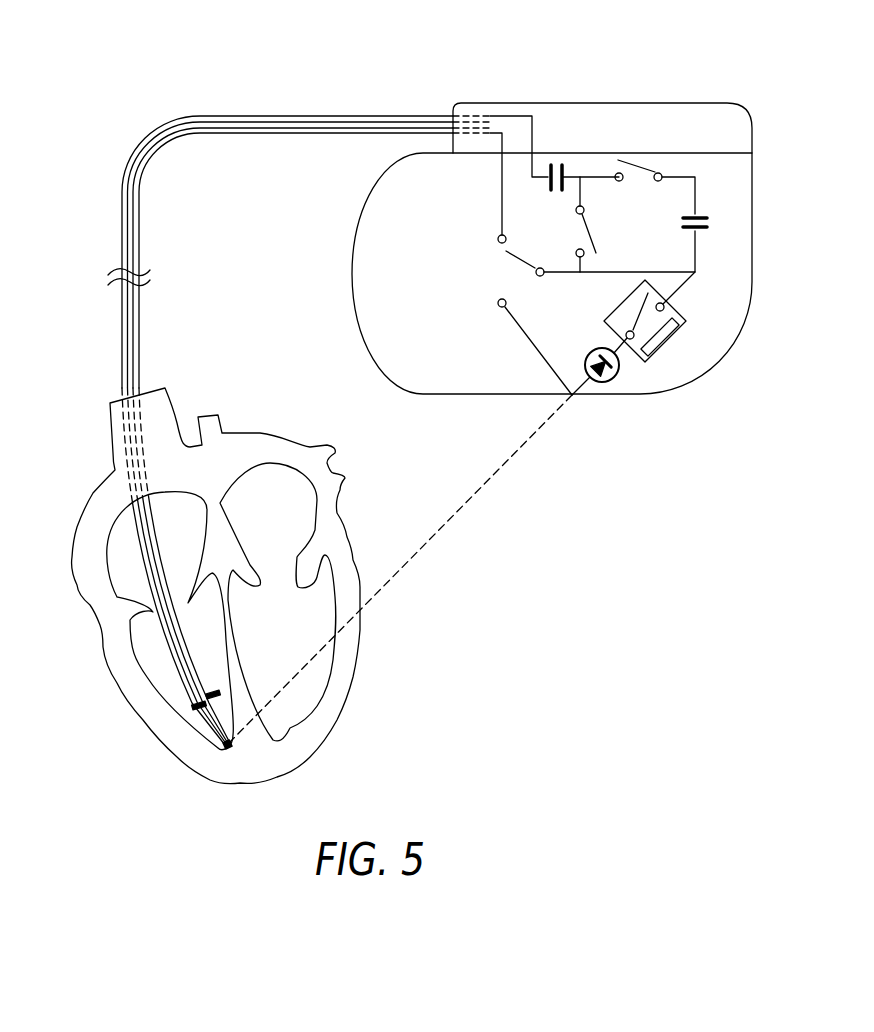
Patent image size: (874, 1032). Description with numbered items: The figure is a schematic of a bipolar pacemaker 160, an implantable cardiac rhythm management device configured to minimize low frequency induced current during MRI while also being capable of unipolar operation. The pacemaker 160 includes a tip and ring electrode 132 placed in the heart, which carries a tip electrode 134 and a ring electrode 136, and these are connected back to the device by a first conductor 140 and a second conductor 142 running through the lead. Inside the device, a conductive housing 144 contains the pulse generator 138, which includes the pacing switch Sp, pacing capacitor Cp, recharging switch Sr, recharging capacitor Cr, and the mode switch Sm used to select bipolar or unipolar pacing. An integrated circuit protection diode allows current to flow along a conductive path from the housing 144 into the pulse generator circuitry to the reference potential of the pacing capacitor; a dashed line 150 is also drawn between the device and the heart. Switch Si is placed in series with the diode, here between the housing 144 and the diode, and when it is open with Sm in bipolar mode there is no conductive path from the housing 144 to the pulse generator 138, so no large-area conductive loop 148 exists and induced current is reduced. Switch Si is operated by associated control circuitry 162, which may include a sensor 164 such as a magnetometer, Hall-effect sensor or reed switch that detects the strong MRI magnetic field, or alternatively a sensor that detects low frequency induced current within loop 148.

The tip and ring electrode 132 is at (178, 731).
The tip electrode 134 is at (196, 706).
The ring electrode 136 is at (228, 750).
The pulse generator 138 is at (735, 187).
The first conductor 140 is at (121, 165).
The second conductor 142 is at (147, 163).
The housing 144 is at (655, 391).
The loop 148 is at (173, 116).
The return current path 150 is at (446, 521).
The bipolar pacemaker 160 is at (785, 231).
The control circuitry 162 is at (678, 312).
The sensor 164 is at (642, 350).